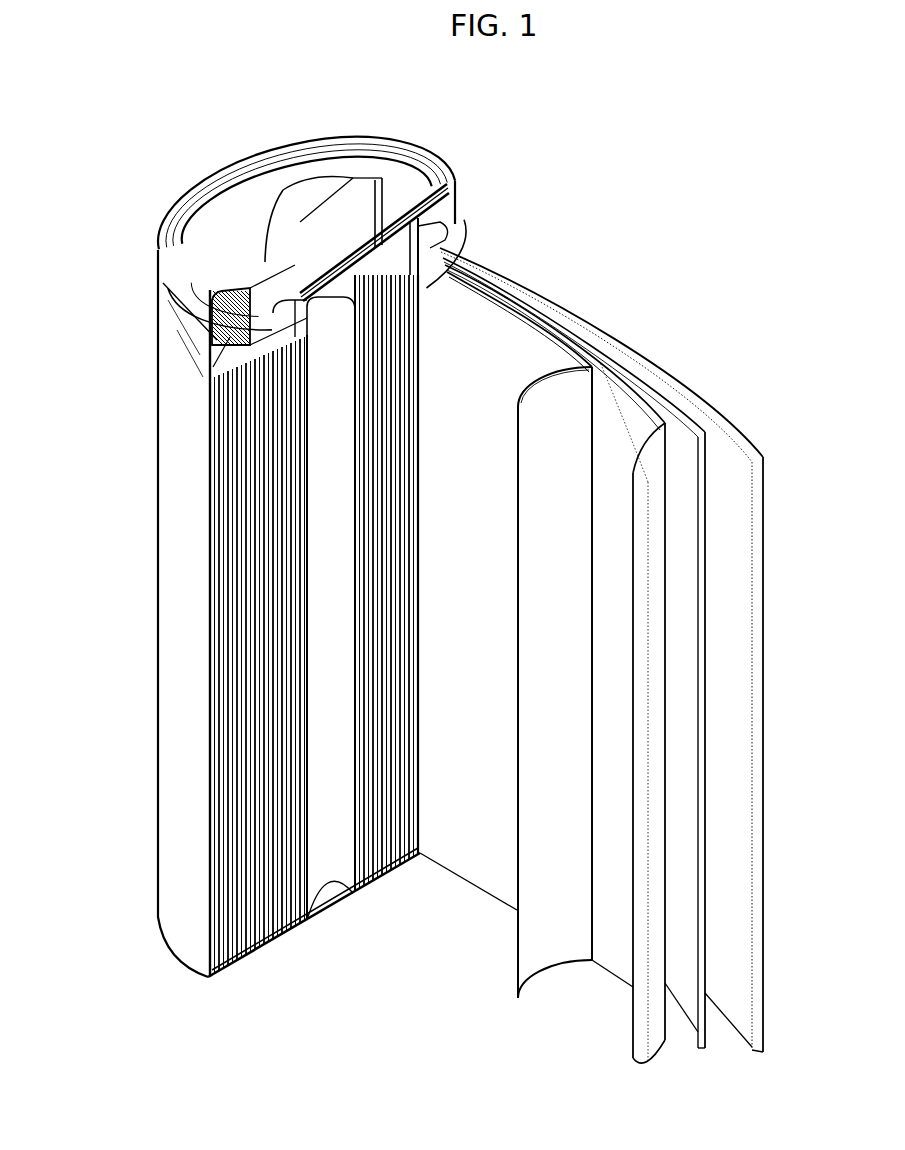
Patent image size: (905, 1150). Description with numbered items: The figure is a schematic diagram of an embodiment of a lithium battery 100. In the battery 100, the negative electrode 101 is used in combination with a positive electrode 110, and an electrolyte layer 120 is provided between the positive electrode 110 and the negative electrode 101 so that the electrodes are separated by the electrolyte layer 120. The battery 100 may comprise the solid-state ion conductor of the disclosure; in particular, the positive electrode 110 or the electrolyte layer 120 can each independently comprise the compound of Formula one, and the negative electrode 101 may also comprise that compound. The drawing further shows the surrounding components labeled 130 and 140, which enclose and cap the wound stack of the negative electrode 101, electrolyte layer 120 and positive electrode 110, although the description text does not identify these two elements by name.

The battery 100 is at (652, 166).
The negative electrode 101 is at (752, 432).
The positive electrode 110 is at (632, 356).
The electrolyte layer 120 is at (540, 300).
The battery can 130 is at (172, 606).
The cap assembly 140 is at (302, 186).